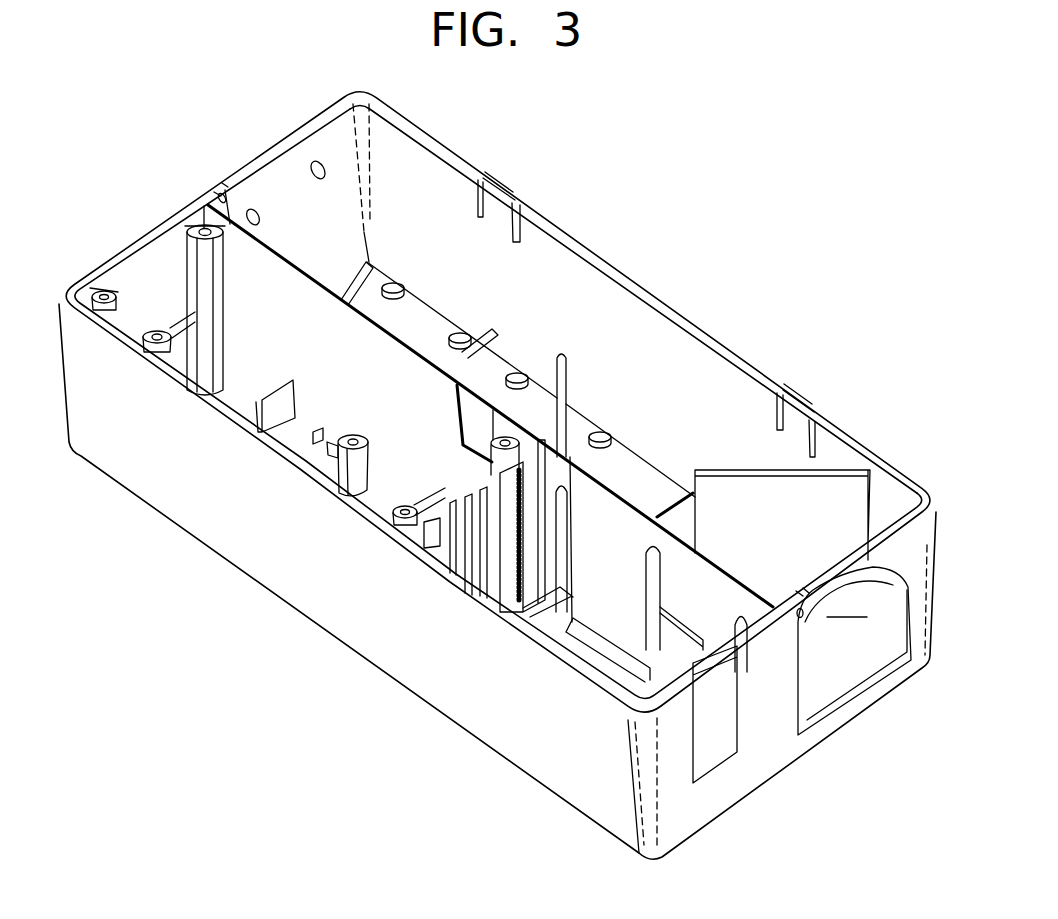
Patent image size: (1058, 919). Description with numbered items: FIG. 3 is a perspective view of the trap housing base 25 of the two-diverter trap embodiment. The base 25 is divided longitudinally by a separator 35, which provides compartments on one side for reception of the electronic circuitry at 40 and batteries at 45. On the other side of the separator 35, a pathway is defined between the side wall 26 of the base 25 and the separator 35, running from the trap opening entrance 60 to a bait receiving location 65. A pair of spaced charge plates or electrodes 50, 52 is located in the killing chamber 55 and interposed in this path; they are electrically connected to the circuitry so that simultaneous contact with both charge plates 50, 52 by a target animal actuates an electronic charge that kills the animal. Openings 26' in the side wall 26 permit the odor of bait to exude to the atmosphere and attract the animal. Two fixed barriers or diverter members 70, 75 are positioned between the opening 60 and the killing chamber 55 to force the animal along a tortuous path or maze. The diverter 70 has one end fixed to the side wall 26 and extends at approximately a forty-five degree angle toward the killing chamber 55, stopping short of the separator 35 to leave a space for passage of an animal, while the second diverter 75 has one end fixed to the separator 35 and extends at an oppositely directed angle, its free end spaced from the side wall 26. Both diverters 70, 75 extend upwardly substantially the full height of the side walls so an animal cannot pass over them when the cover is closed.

The base 25 is at (648, 282).
The side wall 26 is at (633, 299).
The openings 26' is at (241, 166).
The separator 35 is at (626, 570).
The electronic circuitry compartment 40 is at (300, 438).
The battery compartment 45 is at (587, 643).
The charge plate 50 is at (655, 491).
The charge plate 52 is at (438, 340).
The killing chamber 55 is at (456, 240).
The trap opening entrance 60 is at (858, 684).
The bait receiving location 65 is at (375, 262).
The diverter member 70 is at (790, 552).
The second diverter member 75 is at (566, 410).